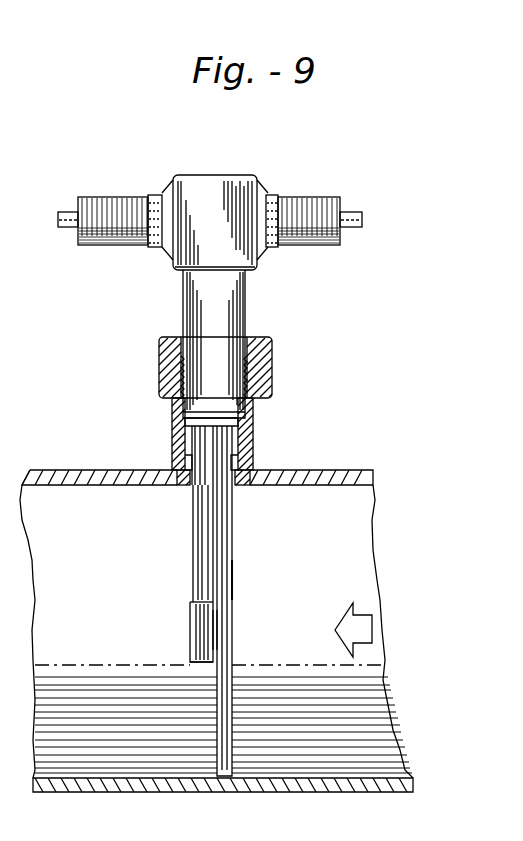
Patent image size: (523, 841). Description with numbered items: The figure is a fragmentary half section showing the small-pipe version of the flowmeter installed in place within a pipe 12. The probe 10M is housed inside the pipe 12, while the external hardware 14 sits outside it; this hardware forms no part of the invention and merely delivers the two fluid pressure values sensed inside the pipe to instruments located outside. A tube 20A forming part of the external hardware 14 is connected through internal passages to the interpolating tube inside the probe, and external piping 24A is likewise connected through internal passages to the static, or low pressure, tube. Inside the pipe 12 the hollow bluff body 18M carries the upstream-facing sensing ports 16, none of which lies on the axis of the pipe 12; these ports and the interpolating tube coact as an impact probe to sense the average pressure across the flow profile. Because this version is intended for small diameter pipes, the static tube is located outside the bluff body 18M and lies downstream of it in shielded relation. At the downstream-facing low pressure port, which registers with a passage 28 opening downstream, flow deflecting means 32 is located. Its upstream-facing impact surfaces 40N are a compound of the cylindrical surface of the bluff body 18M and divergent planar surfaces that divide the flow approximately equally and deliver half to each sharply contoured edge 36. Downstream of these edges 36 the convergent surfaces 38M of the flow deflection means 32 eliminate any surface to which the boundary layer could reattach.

The external hardware 14 is at (237, 161).
The external piping 24A is at (58, 212).
The tube 20A is at (362, 212).
The pipe 12 is at (300, 470).
The probe 10M is at (243, 522).
The upstream-facing sensing ports 16 is at (232, 558).
The bluff body 18M is at (232, 575).
The upstream-facing impact surfaces 40N is at (225, 642).
The sharply contoured edges 36 is at (190, 603).
The flow deflecting means 32 is at (175, 615).
The downstream-facing convergent surfaces 38M is at (197, 630).
The passage 28 is at (192, 640).